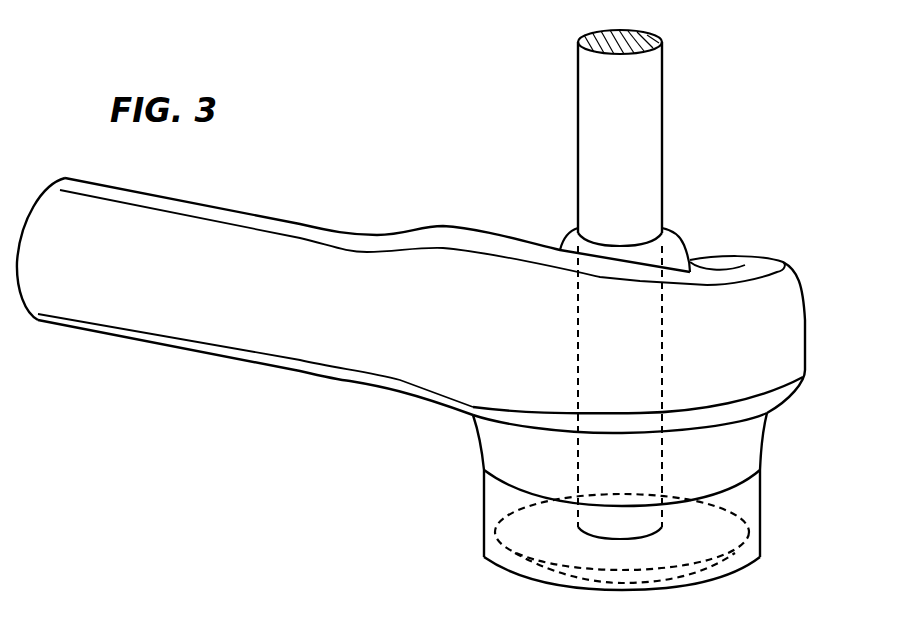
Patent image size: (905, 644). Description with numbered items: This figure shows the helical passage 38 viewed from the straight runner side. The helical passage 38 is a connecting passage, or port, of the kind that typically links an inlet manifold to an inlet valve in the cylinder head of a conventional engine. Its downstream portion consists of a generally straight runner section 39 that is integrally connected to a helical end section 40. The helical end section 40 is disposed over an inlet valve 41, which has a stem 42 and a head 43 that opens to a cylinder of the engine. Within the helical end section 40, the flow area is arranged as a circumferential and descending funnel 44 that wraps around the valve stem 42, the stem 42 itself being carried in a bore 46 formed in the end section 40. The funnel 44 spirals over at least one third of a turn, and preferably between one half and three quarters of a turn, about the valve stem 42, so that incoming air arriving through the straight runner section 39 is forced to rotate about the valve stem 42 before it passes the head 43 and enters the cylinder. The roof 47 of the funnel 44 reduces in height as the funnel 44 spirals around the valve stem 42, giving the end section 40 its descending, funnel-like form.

The helical passage 38 is at (368, 125).
The straight runner section 39 is at (197, 201).
The helical end section 40 is at (805, 353).
The inlet valve 41 is at (577, 167).
The valve stem 42 is at (578, 108).
The head 43 is at (752, 503).
The funnel 44 is at (710, 257).
The bore 46 is at (623, 247).
The roof 47 is at (750, 278).